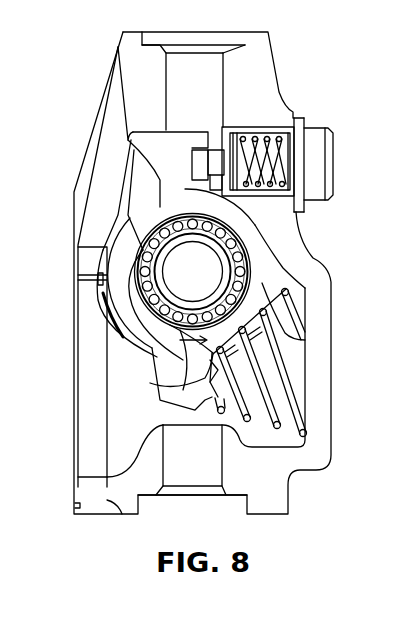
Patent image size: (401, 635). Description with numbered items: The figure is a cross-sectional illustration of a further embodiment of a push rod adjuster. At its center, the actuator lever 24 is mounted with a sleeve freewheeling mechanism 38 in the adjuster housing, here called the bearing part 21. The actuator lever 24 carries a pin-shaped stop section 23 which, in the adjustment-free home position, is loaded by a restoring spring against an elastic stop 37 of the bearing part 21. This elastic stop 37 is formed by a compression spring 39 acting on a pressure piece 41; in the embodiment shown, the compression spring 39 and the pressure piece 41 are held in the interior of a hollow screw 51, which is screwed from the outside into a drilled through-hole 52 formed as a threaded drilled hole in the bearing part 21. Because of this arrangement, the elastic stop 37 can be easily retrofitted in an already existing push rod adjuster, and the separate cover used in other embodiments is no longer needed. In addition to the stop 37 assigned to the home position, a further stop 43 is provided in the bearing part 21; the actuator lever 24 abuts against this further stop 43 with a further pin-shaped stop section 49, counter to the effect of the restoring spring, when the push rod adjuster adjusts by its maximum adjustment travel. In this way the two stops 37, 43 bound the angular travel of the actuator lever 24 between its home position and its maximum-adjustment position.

The bearing part 21 is at (275, 495).
The pin-shaped stop section 23 is at (165, 177).
The actuator lever 24 is at (133, 292).
The stop 37 is at (191, 170).
The sleeve freewheeling mechanism 38 is at (140, 272).
The compression spring 39 is at (265, 137).
The pressure piece 41 is at (218, 158).
The further stop 43 is at (276, 362).
The further pin-shaped stop section 49 is at (207, 380).
The hollow screw 51 is at (302, 122).
The drilled through-hole 52 is at (307, 212).